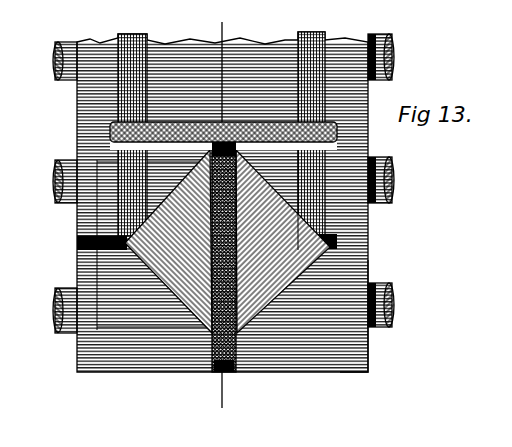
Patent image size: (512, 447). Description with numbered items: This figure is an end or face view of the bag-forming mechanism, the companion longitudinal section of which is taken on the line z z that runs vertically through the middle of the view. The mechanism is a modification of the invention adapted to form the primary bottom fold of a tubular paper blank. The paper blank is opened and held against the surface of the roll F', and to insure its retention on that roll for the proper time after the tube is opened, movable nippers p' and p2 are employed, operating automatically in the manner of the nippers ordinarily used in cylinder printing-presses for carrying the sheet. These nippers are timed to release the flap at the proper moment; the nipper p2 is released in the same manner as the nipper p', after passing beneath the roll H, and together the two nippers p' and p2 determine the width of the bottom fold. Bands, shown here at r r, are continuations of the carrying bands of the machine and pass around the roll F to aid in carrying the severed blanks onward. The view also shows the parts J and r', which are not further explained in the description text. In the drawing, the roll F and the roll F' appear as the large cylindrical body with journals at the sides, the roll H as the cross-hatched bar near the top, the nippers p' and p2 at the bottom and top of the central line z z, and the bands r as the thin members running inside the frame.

The roll F is at (223, 202).
The roll F' is at (367, 316).
The roll H is at (368, 85).
The vertical posts J is at (221, 128).
The section line z is at (224, 216).
The bands r is at (128, 231).
The post side member r' is at (304, 200).
The nipper p2 is at (240, 163).
The nipper p' is at (233, 378).